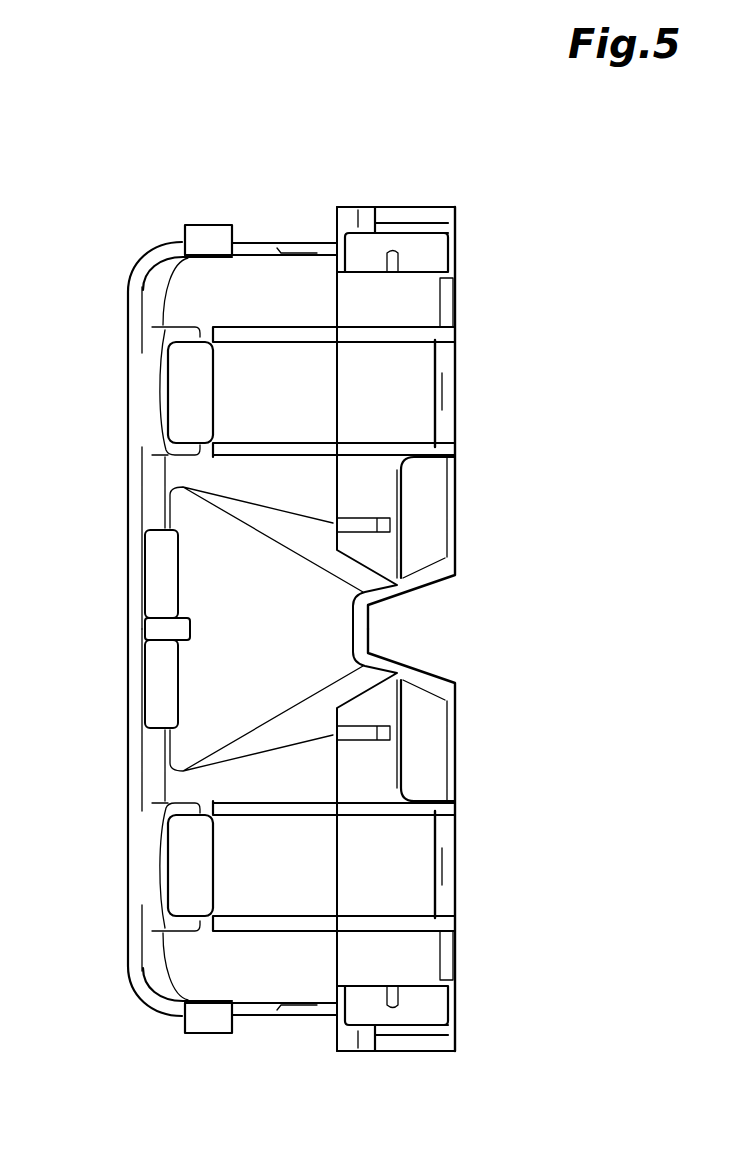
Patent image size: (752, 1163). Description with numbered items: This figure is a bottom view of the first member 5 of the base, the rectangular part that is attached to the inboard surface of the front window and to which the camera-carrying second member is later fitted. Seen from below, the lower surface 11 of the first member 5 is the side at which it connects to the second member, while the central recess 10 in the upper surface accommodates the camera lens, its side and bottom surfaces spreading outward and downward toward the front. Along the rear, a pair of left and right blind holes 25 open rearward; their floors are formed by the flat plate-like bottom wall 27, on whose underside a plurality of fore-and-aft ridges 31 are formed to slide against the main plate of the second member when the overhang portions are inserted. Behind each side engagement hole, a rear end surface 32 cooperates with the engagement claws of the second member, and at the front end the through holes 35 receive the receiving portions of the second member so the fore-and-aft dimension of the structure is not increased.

The first member 5 is at (384, 157).
The recess 10 is at (420, 593).
The lower surface 11 is at (178, 292).
The blind holes 25 is at (452, 846).
The bottom wall 27 is at (423, 914).
The ridges 31 is at (407, 448).
The rear end surface 32 is at (233, 1018).
The through holes 35 is at (188, 848).